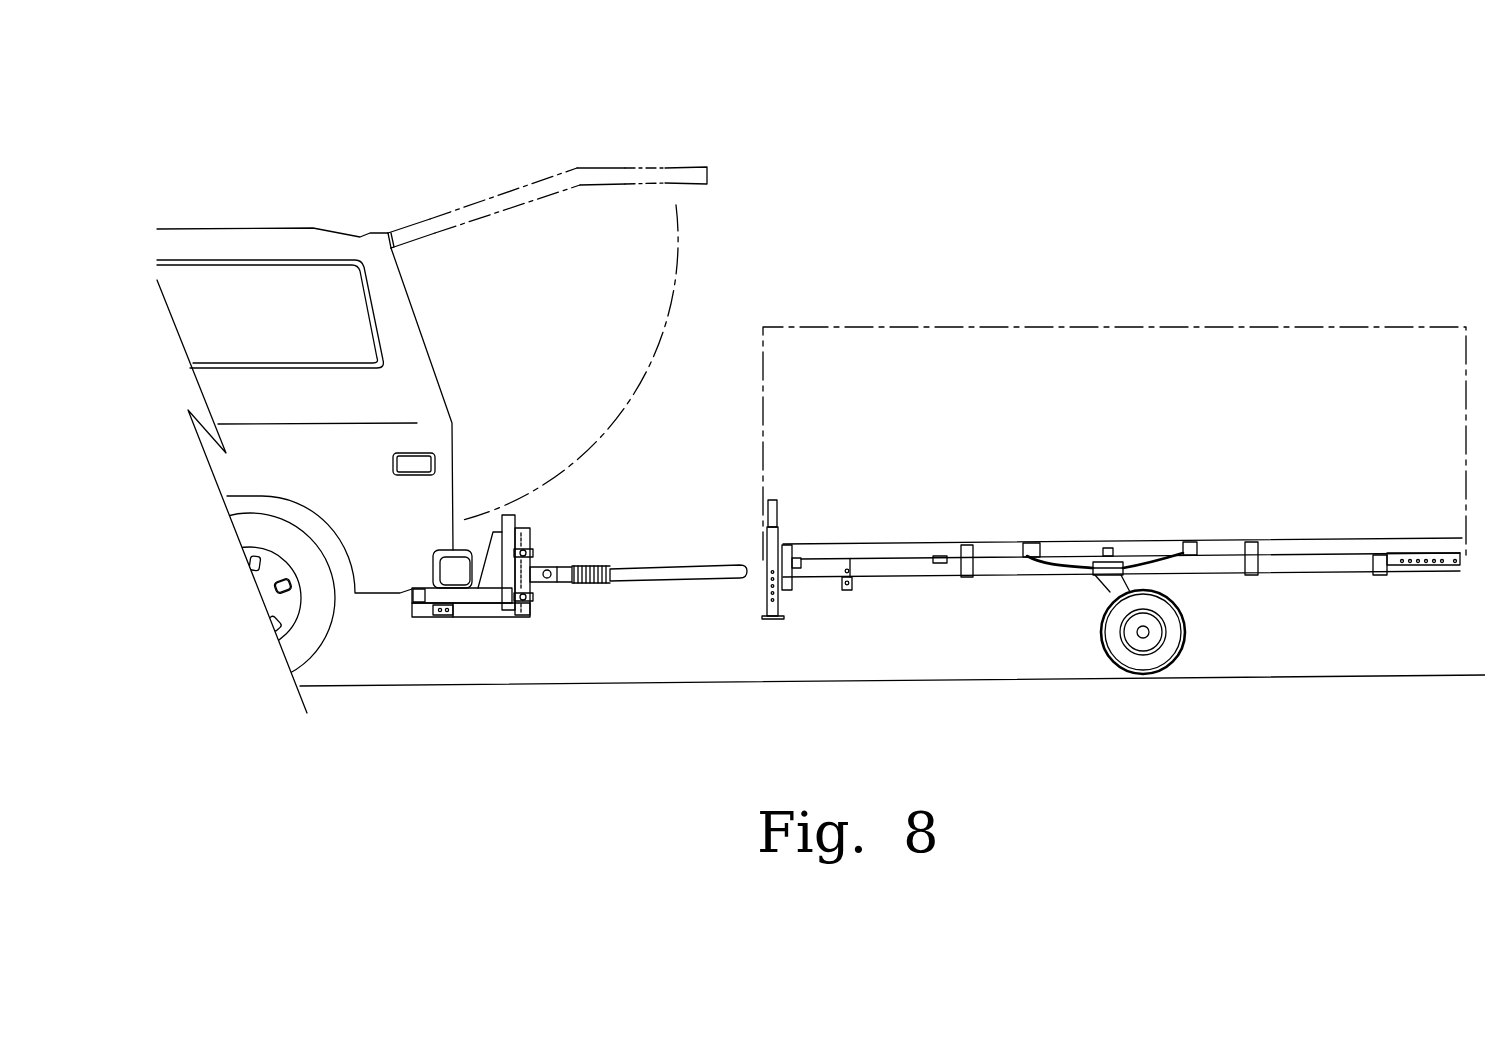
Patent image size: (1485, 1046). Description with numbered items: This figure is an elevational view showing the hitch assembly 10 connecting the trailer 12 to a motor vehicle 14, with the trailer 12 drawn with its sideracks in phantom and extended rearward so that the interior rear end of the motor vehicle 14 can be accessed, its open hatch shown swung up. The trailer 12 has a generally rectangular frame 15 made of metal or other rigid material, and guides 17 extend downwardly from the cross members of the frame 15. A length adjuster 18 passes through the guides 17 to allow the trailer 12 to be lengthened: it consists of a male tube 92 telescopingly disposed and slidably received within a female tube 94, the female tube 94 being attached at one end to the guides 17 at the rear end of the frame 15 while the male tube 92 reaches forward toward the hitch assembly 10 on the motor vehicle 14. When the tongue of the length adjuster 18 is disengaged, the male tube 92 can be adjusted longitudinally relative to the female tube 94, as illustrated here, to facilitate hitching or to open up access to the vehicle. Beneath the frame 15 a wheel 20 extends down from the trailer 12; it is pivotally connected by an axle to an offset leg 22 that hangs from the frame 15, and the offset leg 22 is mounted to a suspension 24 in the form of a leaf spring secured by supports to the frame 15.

The hitch assembly 10 is at (548, 512).
The trailer 12 is at (1127, 357).
The motor vehicle 14 is at (333, 217).
The frame 15 is at (917, 575).
The guides 17 is at (847, 591).
The length adjuster 18 is at (1353, 568).
The wheel 20 is at (1175, 637).
The offset leg 22 is at (1108, 582).
The suspension 24 is at (1057, 553).
The male tube 92 is at (648, 577).
The female tube 94 is at (810, 563).